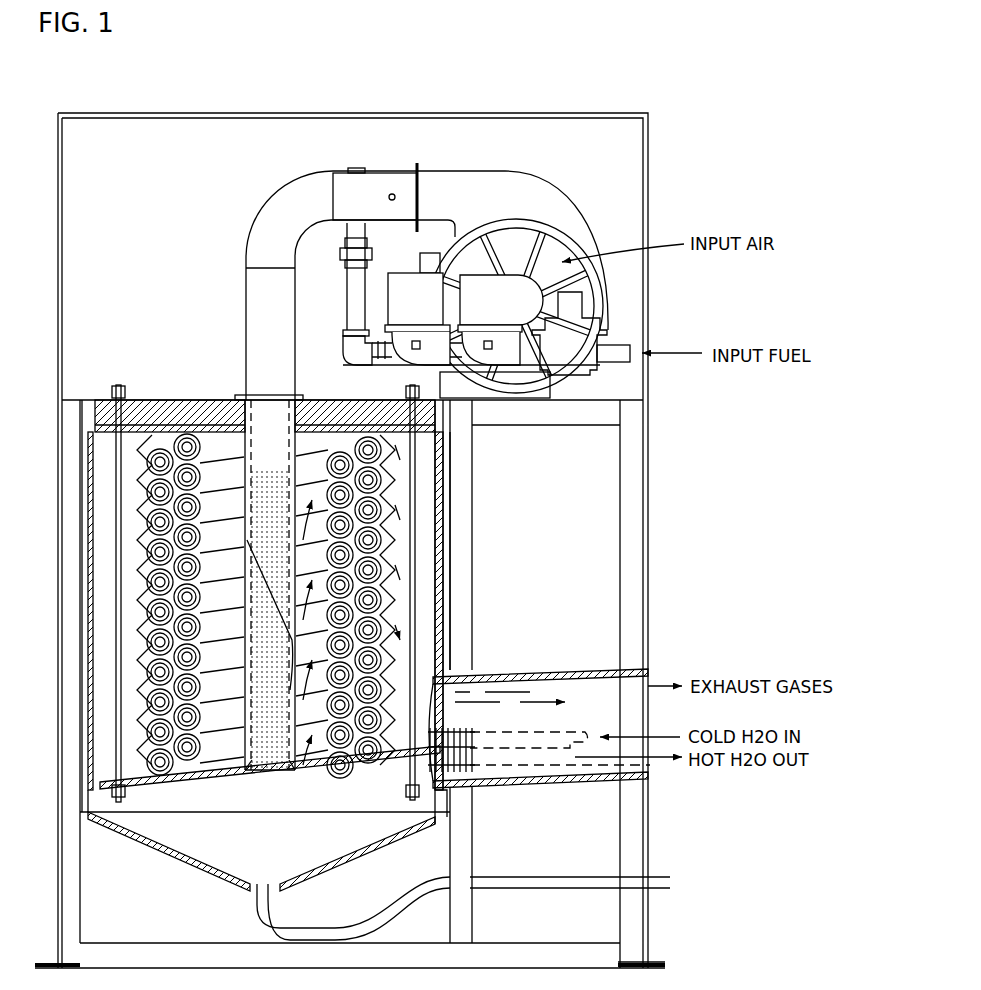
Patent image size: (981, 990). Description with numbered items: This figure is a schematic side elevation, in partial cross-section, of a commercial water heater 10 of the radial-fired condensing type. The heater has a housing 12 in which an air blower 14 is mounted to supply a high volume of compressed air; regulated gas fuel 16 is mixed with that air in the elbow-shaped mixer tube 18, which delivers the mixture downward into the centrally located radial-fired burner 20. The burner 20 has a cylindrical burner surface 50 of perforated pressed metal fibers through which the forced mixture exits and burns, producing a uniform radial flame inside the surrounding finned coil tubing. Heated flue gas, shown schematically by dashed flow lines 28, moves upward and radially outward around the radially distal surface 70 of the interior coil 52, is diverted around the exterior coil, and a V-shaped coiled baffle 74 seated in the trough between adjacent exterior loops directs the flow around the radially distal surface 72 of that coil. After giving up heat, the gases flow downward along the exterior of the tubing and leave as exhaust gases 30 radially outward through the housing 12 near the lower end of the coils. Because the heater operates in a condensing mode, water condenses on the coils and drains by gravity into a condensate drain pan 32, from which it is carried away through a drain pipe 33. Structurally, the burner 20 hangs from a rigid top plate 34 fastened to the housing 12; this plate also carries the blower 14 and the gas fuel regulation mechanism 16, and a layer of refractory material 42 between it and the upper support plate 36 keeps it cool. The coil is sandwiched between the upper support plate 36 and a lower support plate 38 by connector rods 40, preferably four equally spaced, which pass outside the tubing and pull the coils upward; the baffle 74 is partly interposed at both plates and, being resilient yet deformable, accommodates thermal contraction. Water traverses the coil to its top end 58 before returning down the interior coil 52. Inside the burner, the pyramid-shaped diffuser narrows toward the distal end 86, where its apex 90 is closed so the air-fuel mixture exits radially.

The commercial water heater 10 is at (54, 158).
The housing 12 is at (632, 535).
The air blower 14 is at (555, 216).
The regulated gas fuel 16 is at (578, 365).
The mixer tube 18 is at (288, 206).
The radial-fired burner 20 is at (270, 425).
The flow lines 28 is at (403, 577).
The exhaust gases 30 is at (650, 673).
The condensate drain pan 32 is at (215, 874).
The drain pipe 33 is at (262, 914).
The rigid top plate 34 is at (160, 398).
The upper support plate 36 is at (126, 392).
The lower support plate 38 is at (86, 793).
The connector rods 40 is at (115, 565).
The refractory material 42 is at (100, 432).
The cylindrical burner surface 50 is at (352, 486).
The interior coil 52 is at (140, 708).
The top end 58 is at (374, 428).
The radially distal surface of interior coil 70 is at (400, 598).
The radially distal surface of exterior coil 72 is at (420, 635).
The baffle 74 is at (100, 778).
The distal end 86 is at (243, 773).
The apex 90 is at (276, 773).